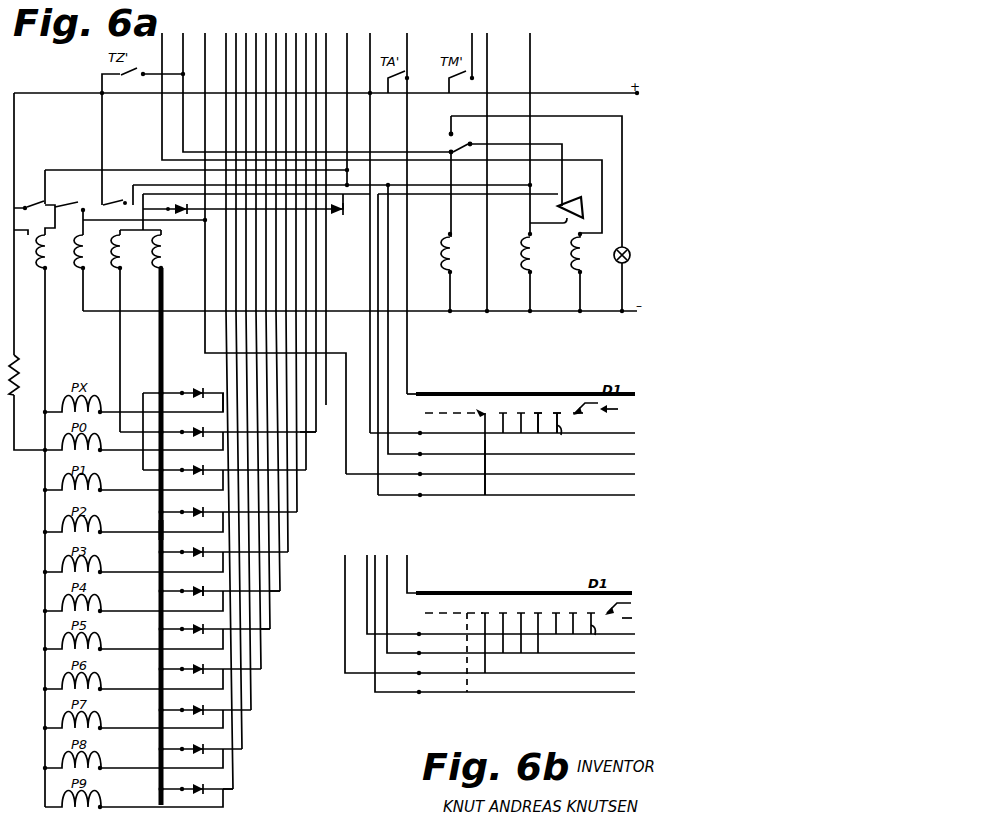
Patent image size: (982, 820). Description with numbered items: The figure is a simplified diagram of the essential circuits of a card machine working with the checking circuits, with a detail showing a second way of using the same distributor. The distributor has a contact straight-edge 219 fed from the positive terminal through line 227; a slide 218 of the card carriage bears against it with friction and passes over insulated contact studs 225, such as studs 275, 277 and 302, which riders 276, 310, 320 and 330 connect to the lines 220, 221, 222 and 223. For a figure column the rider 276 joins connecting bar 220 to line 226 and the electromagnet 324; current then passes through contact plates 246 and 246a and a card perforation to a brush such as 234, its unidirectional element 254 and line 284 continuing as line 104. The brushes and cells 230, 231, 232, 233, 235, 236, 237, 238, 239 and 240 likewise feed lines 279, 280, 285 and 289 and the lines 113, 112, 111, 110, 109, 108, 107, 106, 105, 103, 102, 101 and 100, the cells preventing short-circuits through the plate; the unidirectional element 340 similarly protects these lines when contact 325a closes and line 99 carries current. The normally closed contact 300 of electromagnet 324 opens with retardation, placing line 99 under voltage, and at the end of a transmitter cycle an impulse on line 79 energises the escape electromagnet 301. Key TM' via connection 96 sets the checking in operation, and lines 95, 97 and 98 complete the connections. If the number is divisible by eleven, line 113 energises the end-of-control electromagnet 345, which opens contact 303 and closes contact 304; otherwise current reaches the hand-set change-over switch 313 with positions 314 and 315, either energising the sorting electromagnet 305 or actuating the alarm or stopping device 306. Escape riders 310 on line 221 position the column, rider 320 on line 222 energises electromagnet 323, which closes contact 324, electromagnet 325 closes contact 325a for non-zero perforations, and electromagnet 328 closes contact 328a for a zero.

In FIG. 6a, the line 113 is at (378, 120).
In FIG. 6a, the line 112 is at (313, 79).
In FIG. 6a, the line 111 is at (272, 240).
In FIG. 6a, the line 110 is at (226, 398).
In FIG. 6a, the line 109 is at (236, 378).
In FIG. 6a, the line 108 is at (246, 358).
In FIG. 6a, the line 107 is at (256, 338).
In FIG. 6a, the line 106 is at (266, 318).
In FIG. 6a, the line 105 is at (276, 299).
In FIG. 6a, the line 104 is at (286, 279).
In FIG. 6a, the line 103 is at (296, 259).
In FIG. 6a, the line 102 is at (306, 238).
In FIG. 6a, the line 101 is at (316, 219).
In FIG. 6a, the line 100 is at (326, 206).
In FIG. 6a, the line 99 is at (347, 101).
In FIG. 6a, the line 98 is at (370, 104).
In FIG. 6a, the line 97 is at (407, 163).
In FIG. 6a, the connection 96 is at (472, 47).
In FIG. 6a, the line 95 is at (487, 164).
In FIG. 6a, the line 79 is at (530, 164).
In FIG. 6a, the switch position 315 is at (438, 128).
In FIG. 6a, the two-way change-over switch 313 is at (456, 141).
In FIG. 6a, the switch position 314 is at (438, 191).
In FIG. 6a, the contact 303 is at (575, 198).
In FIG. 6a, the contact 304 is at (548, 230).
In FIG. 6a, the electromagnet 305 is at (460, 272).
In FIG. 6a, the electromagnet 301 is at (539, 253).
In FIG. 6a, the end-of-control electromagnet 345 is at (589, 272).
In FIG. 6a, the alarm device or device for stopping the machine 306 is at (632, 265).
In FIG. 6a, the unidirectional element 340 is at (339, 217).
In FIG. 6a, the contact 300 is at (174, 203).
In FIG. 6a, the line 226 is at (368, 276).
In FIG. 6a, the line 227 is at (409, 333).
In FIG. 6a, the contact 325a is at (29, 196).
In FIG. 6a, the electromagnet 324 is at (121, 233).
In FIG. 6a, the contact 328a is at (116, 195).
In FIG. 6a, the electromagnet 325 is at (31, 521).
In FIG. 6a, the electromagnet 323 is at (67, 273).
In FIG. 6a, the electromagnet 328 is at (105, 333).
In FIG. 6a, the contact straight-edge 219 is at (437, 392).
In FIG. 6a, the stud 277 is at (539, 411).
In FIG. 6a, the stud 275 is at (559, 411).
In FIG. 6a, the stud 302 is at (492, 446).
In FIG. 6a, the insulated contact studs 225 is at (622, 412).
In FIG. 6a, the slide 218 is at (591, 417).
In FIG. 6b, the slide 218 is at (624, 618).
In FIG. 6a, the strap or rider 276 is at (571, 439).
In FIG. 6b, the strap or rider 276 is at (608, 638).
In FIG. 6a, the connecting bar 220 is at (502, 427).
In FIG. 6a, the line 221 is at (511, 320).
In FIG. 6a, the line 222 is at (490, 468).
In FIG. 6b, the line 222 is at (490, 615).
In FIG. 6a, the line 223 is at (506, 489).
In FIG. 6a, the strap or rider 330 is at (486, 468).
In FIG. 6b, the strap or rider 330 is at (466, 693).
In FIG. 6a, the line 280 is at (320, 443).
In FIG. 6a, the contact plate 246 is at (159, 388).
In FIG. 6a, the contact plate 246a is at (158, 531).
In FIG. 6a, the reading brush and unidirectional cell 240 is at (173, 393).
In FIG. 6a, the line 279 is at (219, 397).
In FIG. 6a, the reading brush and unidirectional cell 230 is at (170, 432).
In FIG. 6a, the reading brush and unidirectional cell 231 is at (170, 470).
In FIG. 6a, the reading brush and unidirectional cell 232 is at (170, 512).
In FIG. 6a, the reading brush and unidirectional cell 233 is at (175, 545).
In FIG. 6a, the brush 234 is at (175, 584).
In FIG. 6a, the unidirectional element 254 is at (205, 588).
In FIG. 6a, the reading brush and unidirectional cell 235 is at (175, 622).
In FIG. 6a, the reading brush and unidirectional cell 236 is at (175, 662).
In FIG. 6a, the reading brush and unidirectional cell 237 is at (175, 703).
In FIG. 6a, the reading brush and unidirectional cell 238 is at (175, 742).
In FIG. 6a, the reading brush and unidirectional cell 239 is at (175, 782).
In FIG. 6a, the line 284 is at (280, 591).
In FIG. 6a, the line 285 is at (270, 629).
In FIG. 6a, the line 289 is at (233, 789).
In FIG. 6b, the strap or rider 320 is at (492, 620).
In FIG. 6b, the escape straps or riders 310 is at (513, 620).